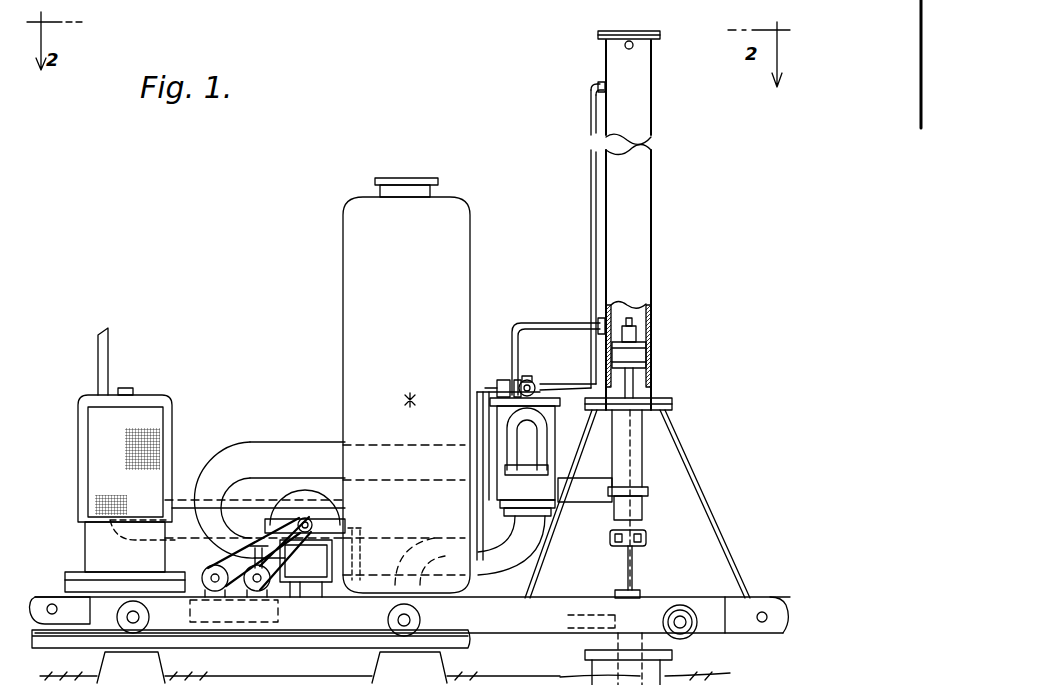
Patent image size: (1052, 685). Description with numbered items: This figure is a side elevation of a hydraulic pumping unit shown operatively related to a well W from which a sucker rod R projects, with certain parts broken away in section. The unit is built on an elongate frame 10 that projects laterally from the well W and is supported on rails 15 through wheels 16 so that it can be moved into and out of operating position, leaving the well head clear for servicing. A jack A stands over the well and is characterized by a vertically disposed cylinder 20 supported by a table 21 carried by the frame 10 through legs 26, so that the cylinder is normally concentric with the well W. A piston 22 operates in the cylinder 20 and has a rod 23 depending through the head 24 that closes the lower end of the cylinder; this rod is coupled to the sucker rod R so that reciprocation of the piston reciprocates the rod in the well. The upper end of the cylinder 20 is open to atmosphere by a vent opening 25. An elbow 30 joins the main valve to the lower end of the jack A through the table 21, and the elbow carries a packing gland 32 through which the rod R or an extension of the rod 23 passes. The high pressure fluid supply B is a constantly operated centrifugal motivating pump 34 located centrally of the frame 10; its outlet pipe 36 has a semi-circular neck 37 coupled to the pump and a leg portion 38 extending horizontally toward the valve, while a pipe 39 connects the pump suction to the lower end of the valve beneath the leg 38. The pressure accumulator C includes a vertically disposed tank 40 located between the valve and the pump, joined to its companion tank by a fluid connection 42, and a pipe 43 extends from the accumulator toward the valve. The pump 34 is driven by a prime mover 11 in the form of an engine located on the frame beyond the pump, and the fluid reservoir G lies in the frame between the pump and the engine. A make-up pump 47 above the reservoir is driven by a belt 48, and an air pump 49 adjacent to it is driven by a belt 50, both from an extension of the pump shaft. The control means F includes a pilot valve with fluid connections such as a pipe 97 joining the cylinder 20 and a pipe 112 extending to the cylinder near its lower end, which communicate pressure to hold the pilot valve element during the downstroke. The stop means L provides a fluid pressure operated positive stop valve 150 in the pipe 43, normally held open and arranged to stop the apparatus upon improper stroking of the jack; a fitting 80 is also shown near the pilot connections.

The jack A is at (650, 232).
The high pressure fluid supply B is at (303, 492).
The pressure accumulator C is at (455, 258).
The control means F is at (524, 376).
The fluid reservoir G is at (236, 640).
The stop means L is at (497, 378).
The sucker rod R is at (634, 571).
The well W is at (665, 672).
The frame 10 is at (590, 580).
The prime mover 11 is at (170, 402).
The rails 15 is at (275, 655).
The wheels 16 is at (115, 612).
The cylinder 20 is at (645, 283).
The table 21 is at (655, 406).
The piston 22 is at (650, 357).
The rod 23 is at (628, 380).
The head 24 is at (640, 420).
The vent opening 25 is at (624, 47).
The legs 26 is at (705, 500).
The elbow 30 is at (642, 441).
The packing gland 32 is at (640, 497).
The centrifugal motivating pump 34 is at (340, 505).
The pipe 36 is at (272, 428).
The semi-circular neck 37 is at (205, 478).
The leg portion 38 is at (328, 470).
The pipe 39 is at (492, 578).
The tank 40 is at (404, 438).
The fluid connection 42 is at (420, 390).
The pipe 43 is at (488, 538).
The pump 47 is at (195, 570).
The belt 48 is at (250, 546).
The air pump 49 is at (240, 618).
The belt 50 is at (306, 568).
The valve 80 is at (537, 388).
The pipe 97 is at (590, 125).
The pipe 112 is at (570, 326).
The stop valve 150 is at (545, 486).